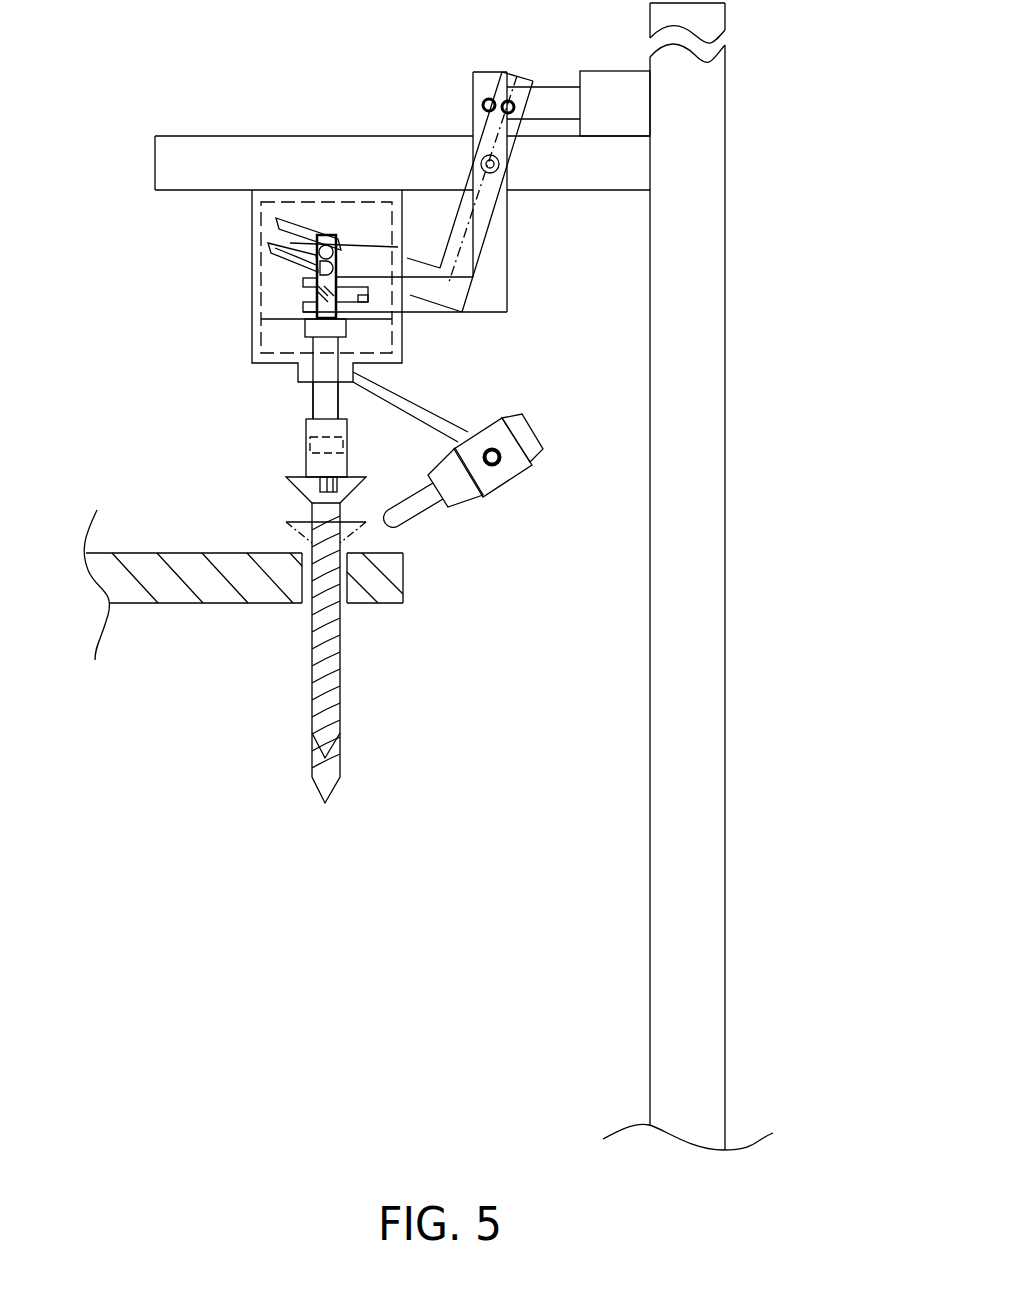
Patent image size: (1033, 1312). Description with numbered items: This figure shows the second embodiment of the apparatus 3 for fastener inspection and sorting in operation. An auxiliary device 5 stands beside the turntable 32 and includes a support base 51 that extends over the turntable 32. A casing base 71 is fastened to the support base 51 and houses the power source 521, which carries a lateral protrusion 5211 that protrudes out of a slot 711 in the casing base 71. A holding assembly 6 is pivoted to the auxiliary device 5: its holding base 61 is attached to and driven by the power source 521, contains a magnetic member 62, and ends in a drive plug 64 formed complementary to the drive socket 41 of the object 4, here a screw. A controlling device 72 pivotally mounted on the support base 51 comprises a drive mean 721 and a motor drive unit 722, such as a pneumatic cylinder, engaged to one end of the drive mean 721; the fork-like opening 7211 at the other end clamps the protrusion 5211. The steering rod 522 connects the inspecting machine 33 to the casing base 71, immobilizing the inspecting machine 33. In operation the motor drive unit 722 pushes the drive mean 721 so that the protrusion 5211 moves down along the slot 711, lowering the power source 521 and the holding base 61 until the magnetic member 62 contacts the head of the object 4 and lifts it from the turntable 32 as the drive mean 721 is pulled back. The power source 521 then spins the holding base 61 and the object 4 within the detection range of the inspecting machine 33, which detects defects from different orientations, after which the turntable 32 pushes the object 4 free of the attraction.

The apparatus for fastener inspection and sorting 3 is at (148, 995).
The object 4 is at (330, 678).
The drive socket 41 is at (335, 530).
The auxiliary device 5 is at (228, 136).
The support base 51 is at (287, 160).
The power source 521 is at (290, 298).
The protrusion 5211 is at (340, 290).
The steering rod 522 is at (417, 410).
The holding assembly 6 is at (300, 420).
The holding base 61 is at (315, 467).
The magnetic member 62 is at (305, 438).
The drive plug 64 is at (315, 486).
The casing base 71 is at (250, 333).
The slot 711 is at (318, 245).
The controlling device 72 is at (512, 250).
The drive mean 721 is at (492, 288).
The fork-like opening 7211 is at (370, 298).
The motor drive unit 722 is at (612, 83).
The turntable 32 is at (207, 590).
The inspecting machine 33 is at (457, 490).